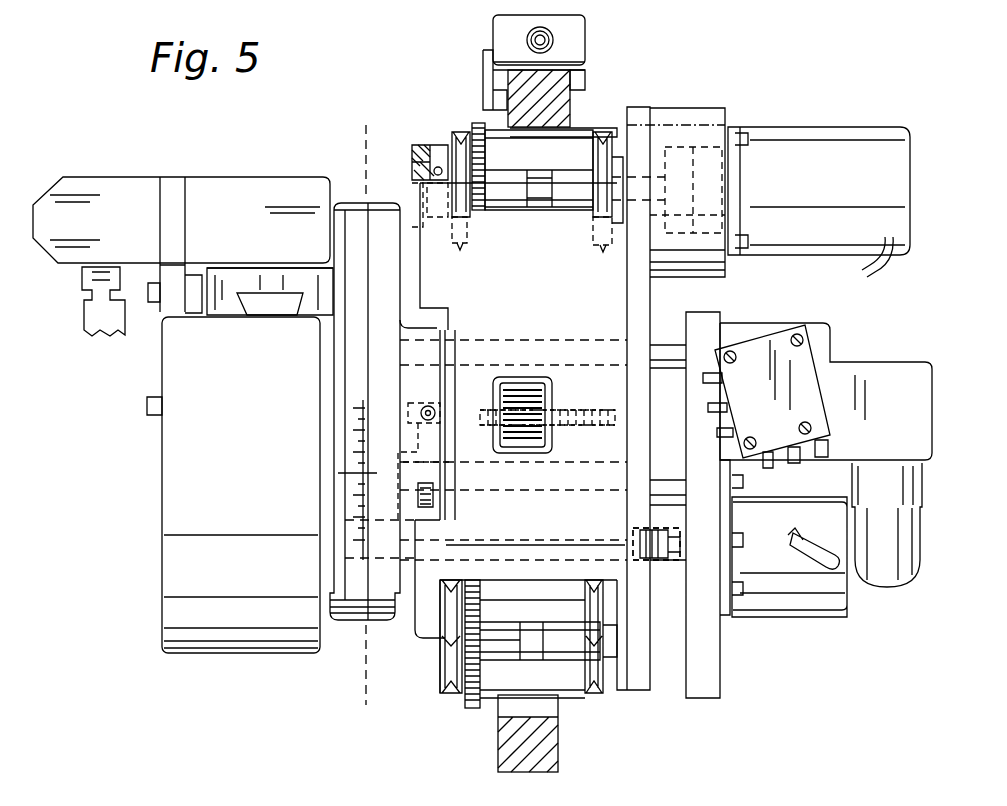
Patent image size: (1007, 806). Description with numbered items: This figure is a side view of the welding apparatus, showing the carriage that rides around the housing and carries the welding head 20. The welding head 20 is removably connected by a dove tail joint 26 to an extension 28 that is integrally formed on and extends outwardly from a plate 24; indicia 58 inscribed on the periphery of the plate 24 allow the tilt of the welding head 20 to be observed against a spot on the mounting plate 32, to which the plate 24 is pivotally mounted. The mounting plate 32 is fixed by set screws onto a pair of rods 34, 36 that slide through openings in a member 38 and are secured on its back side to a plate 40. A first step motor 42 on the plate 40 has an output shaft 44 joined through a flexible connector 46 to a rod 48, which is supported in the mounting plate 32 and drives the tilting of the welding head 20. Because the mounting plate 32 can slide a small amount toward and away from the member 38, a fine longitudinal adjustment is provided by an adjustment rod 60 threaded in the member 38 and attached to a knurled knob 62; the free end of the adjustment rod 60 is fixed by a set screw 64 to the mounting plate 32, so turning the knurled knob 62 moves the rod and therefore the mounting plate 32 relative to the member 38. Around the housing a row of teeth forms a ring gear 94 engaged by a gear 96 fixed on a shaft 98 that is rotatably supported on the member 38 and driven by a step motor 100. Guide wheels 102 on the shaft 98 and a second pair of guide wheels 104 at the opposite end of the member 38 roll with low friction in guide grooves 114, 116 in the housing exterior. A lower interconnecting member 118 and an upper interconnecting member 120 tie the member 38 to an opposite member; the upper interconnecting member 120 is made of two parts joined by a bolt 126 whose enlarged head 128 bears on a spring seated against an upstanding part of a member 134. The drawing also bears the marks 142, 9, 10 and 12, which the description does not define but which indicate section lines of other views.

The welding head 20 is at (160, 624).
The plate 24 is at (352, 205).
The dove tail joint 26 is at (283, 312).
The extension 28 is at (288, 275).
The mounting plate 32 is at (388, 255).
The rod 34 is at (668, 348).
The rod 36 is at (632, 462).
The member 38 is at (523, 555).
The plate 40 is at (705, 672).
The first step motor 42 is at (825, 600).
The output shaft 44 is at (674, 562).
The flexible connector 46 is at (640, 540).
The rod 48 is at (492, 528).
The indicia 58 is at (347, 486).
The adjustment rod 60 is at (480, 408).
The knurled knob 62 is at (525, 378).
The set screw 64 is at (424, 405).
The ring gear 94 is at (480, 124).
The gear 96 is at (488, 215).
The shaft 98 is at (570, 200).
The step motor 100 is at (800, 145).
The guide wheels 102 is at (455, 135).
The guide wheels 104 is at (445, 632).
The guide groove 114 is at (450, 692).
The guide groove 116 is at (597, 692).
The lower interconnecting member 118 is at (525, 770).
The upper interconnecting member 120 is at (575, 82).
The bolt 126 is at (554, 42).
The enlarged head 128 is at (498, 32).
The member 134 is at (565, 106).
The flange 142 is at (486, 80).
The section line 9 is at (415, 410).
The section line 10 is at (415, 548).
The section line 12 is at (368, 140).